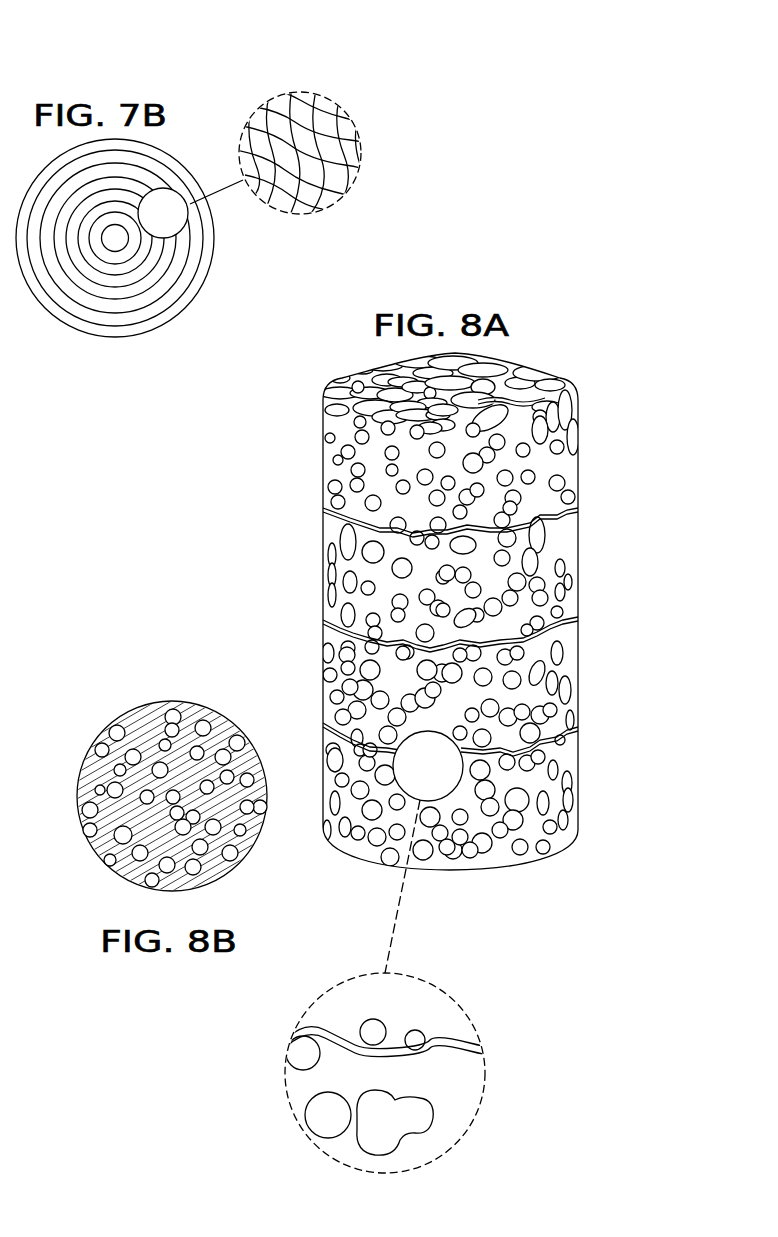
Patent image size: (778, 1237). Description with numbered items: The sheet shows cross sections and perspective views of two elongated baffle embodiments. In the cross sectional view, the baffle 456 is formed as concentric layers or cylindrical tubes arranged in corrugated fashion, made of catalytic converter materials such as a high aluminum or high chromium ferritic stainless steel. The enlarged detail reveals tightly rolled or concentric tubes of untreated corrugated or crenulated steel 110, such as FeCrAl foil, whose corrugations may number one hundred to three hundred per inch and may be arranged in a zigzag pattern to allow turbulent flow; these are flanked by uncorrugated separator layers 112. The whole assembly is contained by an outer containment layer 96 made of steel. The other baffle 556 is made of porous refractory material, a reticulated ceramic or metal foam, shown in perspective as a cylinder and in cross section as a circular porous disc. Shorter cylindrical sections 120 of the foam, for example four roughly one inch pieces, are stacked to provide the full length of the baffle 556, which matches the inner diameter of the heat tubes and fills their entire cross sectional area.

In FIG. 7B, the baffle 456 is at (88, 342).
In FIG. 7B, the outer containment layer 96 is at (157, 330).
In FIG. 7B, the corrugated or crenulated steel 110 is at (305, 110).
In FIG. 7B, the uncorrugated separator layers 112 is at (352, 130).
In FIG. 8A, the cylindrical sections 120 is at (530, 462).
In FIG. 8A, the baffle 556 is at (476, 763).
In FIG. 8B, the baffle 556 is at (88, 870).